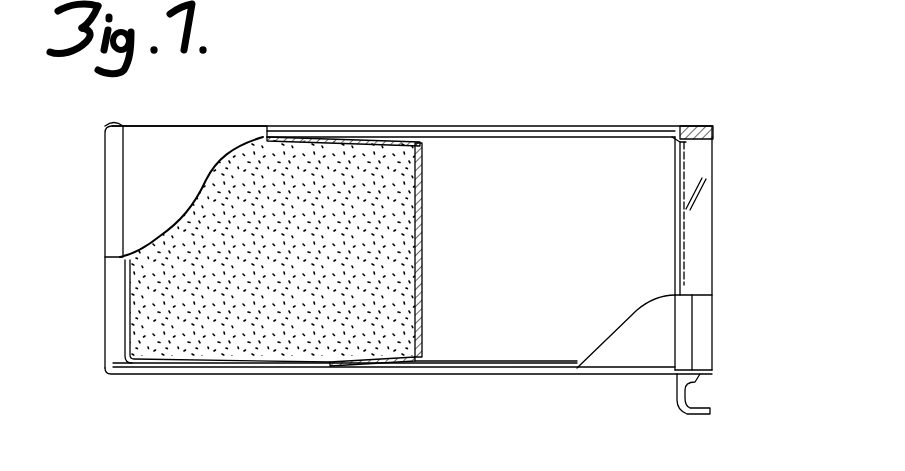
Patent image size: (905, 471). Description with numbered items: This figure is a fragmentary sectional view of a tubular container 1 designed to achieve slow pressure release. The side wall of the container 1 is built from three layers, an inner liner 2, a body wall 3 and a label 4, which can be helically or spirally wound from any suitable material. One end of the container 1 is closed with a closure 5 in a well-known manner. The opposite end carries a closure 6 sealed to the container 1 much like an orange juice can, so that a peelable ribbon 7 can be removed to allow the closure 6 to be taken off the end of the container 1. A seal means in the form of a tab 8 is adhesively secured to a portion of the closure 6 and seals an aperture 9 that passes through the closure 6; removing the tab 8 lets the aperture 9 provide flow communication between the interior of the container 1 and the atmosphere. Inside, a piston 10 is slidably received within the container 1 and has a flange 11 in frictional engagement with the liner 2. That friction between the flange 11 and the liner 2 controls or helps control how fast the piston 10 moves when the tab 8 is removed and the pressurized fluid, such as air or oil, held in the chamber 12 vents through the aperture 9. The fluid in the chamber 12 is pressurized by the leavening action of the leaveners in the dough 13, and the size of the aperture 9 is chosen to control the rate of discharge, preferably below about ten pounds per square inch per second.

The tubular container 1 is at (466, 90).
The inner liner 2 is at (548, 138).
The body wall 3 is at (572, 127).
The label 4 is at (530, 127).
The closure 5 is at (105, 312).
The closure 6 is at (713, 130).
The peelable ribbon 7 is at (705, 403).
The tab 8 is at (690, 208).
The aperture 9 is at (678, 245).
The piston 10 is at (425, 275).
The flange 11 is at (366, 368).
The chamber 12 is at (490, 350).
The dough 13 is at (382, 166).